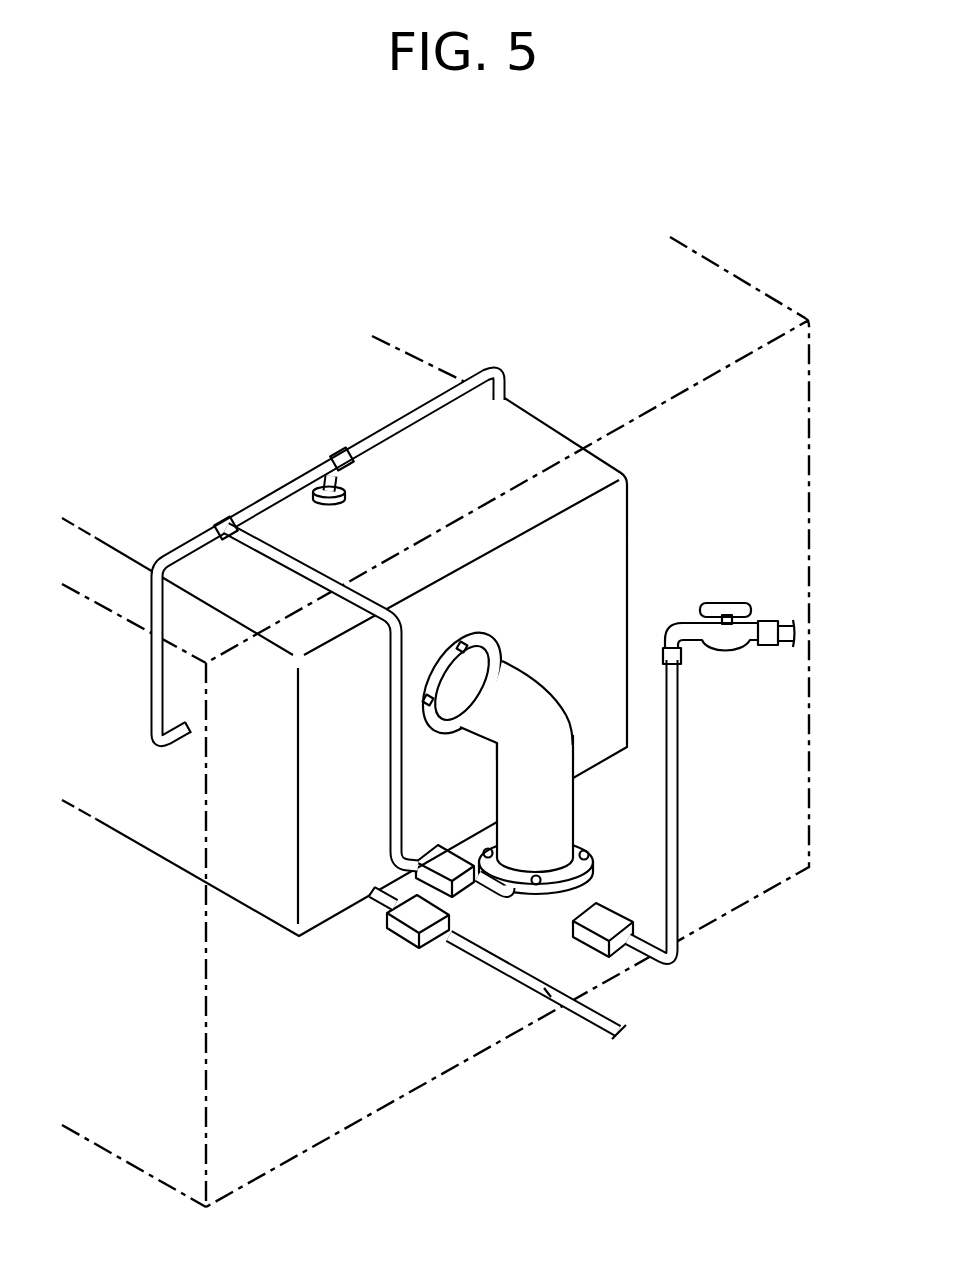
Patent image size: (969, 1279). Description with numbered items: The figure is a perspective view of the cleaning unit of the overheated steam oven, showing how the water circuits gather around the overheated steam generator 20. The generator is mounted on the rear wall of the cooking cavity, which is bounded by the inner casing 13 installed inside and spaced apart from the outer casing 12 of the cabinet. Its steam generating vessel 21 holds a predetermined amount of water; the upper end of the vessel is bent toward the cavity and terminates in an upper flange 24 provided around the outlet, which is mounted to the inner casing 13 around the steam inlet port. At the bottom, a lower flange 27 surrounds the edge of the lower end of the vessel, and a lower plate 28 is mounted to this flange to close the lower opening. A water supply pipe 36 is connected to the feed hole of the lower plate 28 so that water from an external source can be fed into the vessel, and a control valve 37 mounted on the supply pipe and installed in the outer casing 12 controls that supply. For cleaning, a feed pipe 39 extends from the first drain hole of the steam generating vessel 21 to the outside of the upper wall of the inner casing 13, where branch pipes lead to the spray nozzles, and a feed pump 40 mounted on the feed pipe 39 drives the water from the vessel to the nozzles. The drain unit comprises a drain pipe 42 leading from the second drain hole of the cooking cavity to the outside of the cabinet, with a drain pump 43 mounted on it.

The outer casing 12 is at (718, 264).
The inner casing 13 is at (440, 368).
The overheated steam generator 20 is at (568, 693).
The steam generating vessel 21 is at (562, 803).
The upper flange 24 is at (499, 642).
The lower flange 27 is at (580, 838).
The lower plate 28 is at (538, 899).
The water supply pipe 36 is at (588, 897).
The control valve 37 is at (597, 950).
The feed pipe 39 is at (381, 437).
The feed pump 40 is at (414, 869).
The drain pipe 42 is at (376, 902).
The drain pump 43 is at (407, 930).